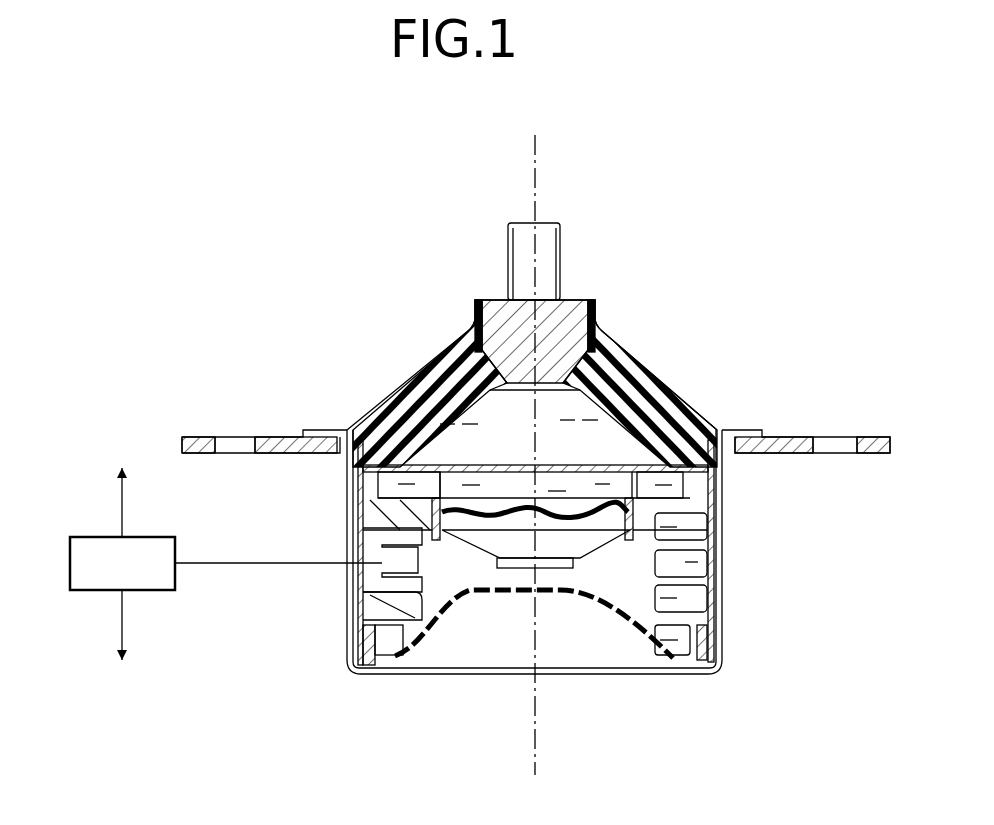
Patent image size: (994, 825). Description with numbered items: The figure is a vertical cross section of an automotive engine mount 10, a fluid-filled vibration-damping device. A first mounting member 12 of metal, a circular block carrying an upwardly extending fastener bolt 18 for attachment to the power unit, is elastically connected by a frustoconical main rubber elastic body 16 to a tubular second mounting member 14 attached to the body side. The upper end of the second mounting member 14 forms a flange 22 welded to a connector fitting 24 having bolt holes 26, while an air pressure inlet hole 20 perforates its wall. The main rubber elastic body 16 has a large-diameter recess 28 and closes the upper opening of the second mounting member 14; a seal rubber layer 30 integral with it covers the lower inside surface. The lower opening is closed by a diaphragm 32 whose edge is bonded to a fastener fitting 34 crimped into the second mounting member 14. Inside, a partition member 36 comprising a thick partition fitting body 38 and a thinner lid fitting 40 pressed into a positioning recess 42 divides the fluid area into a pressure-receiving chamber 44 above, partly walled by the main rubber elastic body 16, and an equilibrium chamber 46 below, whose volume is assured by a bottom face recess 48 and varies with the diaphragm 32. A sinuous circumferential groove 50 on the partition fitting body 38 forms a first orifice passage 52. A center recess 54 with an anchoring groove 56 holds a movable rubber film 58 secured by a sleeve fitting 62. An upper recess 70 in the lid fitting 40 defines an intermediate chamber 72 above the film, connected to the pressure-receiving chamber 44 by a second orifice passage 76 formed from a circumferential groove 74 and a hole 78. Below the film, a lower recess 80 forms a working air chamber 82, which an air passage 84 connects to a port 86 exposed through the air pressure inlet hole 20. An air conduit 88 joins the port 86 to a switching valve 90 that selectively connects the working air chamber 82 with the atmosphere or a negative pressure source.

The engine mount 10 is at (690, 288).
The first mounting member 12 is at (570, 315).
The second mounting member 14 is at (352, 497).
The main rubber elastic body 16 is at (612, 360).
The fastener bolt 18 is at (546, 258).
The air pressure inlet hole 20 is at (350, 588).
The flange 22 is at (740, 432).
The connector fitting 24 is at (788, 448).
The bolt holes 26 is at (849, 450).
The large-diameter recess 28 is at (477, 398).
The seal rubber layer 30 is at (356, 506).
The diaphragm 32 is at (470, 605).
The fastener fitting 34 is at (360, 665).
The partition member 36 is at (417, 458).
The partition fitting body 38 is at (612, 565).
The lid fitting 40 is at (595, 465).
The positioning recess 42 is at (368, 482).
The pressure-receiving chamber 44 is at (496, 439).
The equilibrium chamber 46 is at (381, 648).
The bottom face recess 48 is at (437, 628).
The circumferential groove 50 is at (688, 592).
The first orifice passage 52 is at (657, 571).
The center recess 54 is at (677, 465).
The anchoring groove 56 is at (650, 590).
The movable rubber film 58 is at (561, 522).
The sleeve fitting 62 is at (702, 518).
The upper recess 70 is at (632, 465).
The intermediate chamber 72 is at (492, 496).
The circumferential groove 74 is at (687, 487).
The second orifice passage 76 is at (395, 496).
The hole 78 is at (433, 475).
The lower recess 80 is at (588, 545).
The working air chamber 82 is at (504, 556).
The air passage 84 is at (491, 572).
The port 86 is at (363, 637).
The air conduit 88 is at (240, 565).
The switching valve 90 is at (153, 582).